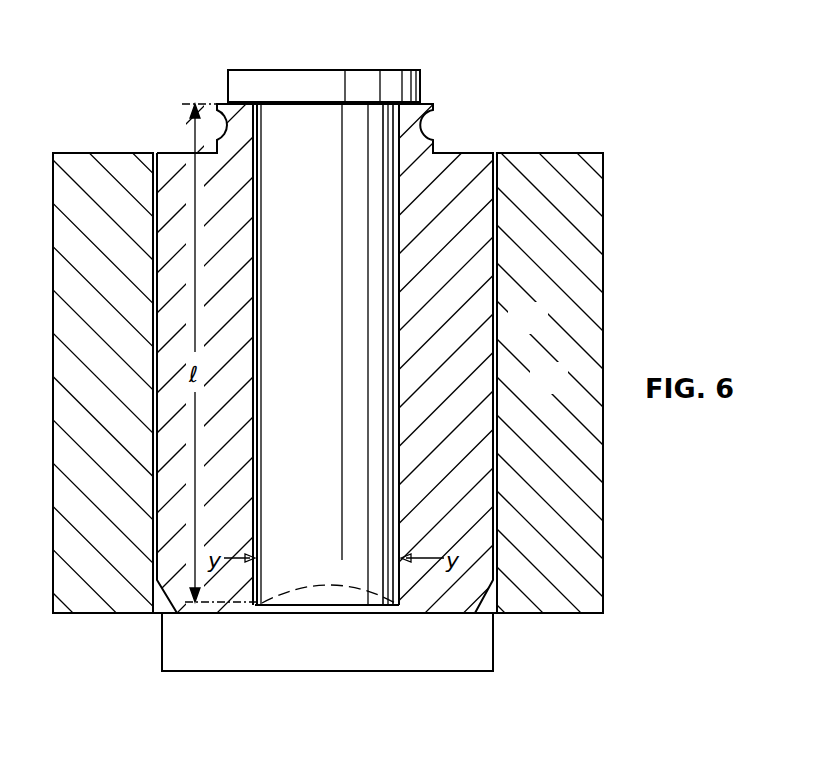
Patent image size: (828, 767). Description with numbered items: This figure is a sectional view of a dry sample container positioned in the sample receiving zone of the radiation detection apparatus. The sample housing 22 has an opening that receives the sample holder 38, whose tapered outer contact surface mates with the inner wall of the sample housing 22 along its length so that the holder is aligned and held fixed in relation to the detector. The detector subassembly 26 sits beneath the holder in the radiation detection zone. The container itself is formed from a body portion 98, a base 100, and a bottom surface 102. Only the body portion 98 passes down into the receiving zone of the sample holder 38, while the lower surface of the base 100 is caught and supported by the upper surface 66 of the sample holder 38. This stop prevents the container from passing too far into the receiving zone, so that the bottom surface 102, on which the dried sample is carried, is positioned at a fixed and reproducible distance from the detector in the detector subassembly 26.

The sample housing 22 is at (560, 512).
The detector subassembly 26 is at (493, 638).
The sample holder 38 is at (466, 396).
The upper surface 66 is at (433, 103).
The body portion 98 is at (363, 360).
The base 100 is at (422, 88).
The bottom surface 102 is at (322, 585).